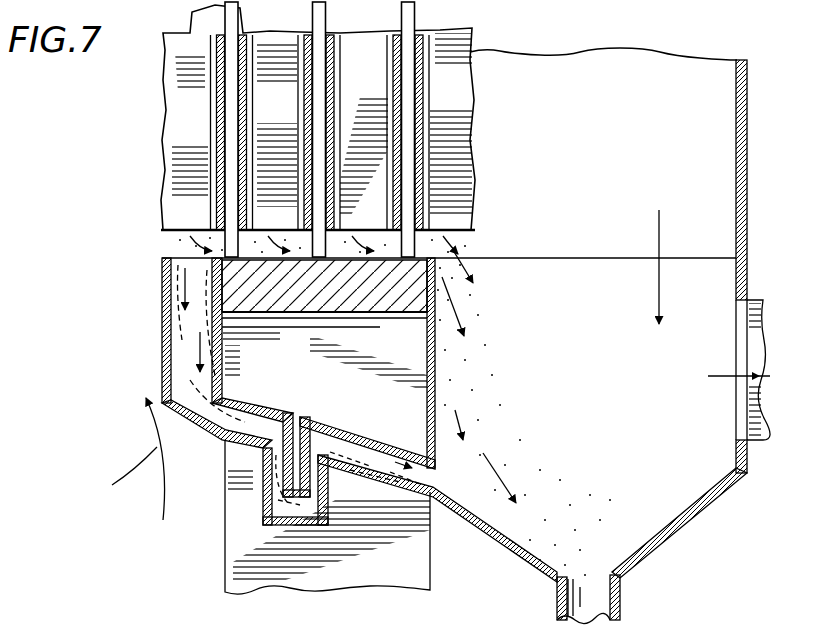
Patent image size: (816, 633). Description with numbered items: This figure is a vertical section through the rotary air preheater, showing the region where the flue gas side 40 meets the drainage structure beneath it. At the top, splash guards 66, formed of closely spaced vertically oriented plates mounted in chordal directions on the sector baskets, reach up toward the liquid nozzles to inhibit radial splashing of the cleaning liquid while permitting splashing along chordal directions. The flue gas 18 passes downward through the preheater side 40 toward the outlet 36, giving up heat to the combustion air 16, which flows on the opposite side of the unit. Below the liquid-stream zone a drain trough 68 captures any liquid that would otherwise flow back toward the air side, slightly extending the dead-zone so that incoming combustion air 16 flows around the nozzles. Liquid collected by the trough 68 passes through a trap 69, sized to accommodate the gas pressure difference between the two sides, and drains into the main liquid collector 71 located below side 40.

The splash guards 66 is at (177, 122).
The flue gas side 40 is at (608, 152).
The outlet 36 is at (578, 245).
The flue gas 18 is at (660, 277).
The drain trough 68 is at (161, 300).
The combustion air 16 is at (133, 459).
The trap 69 is at (264, 503).
The main liquid collector 71 is at (676, 517).